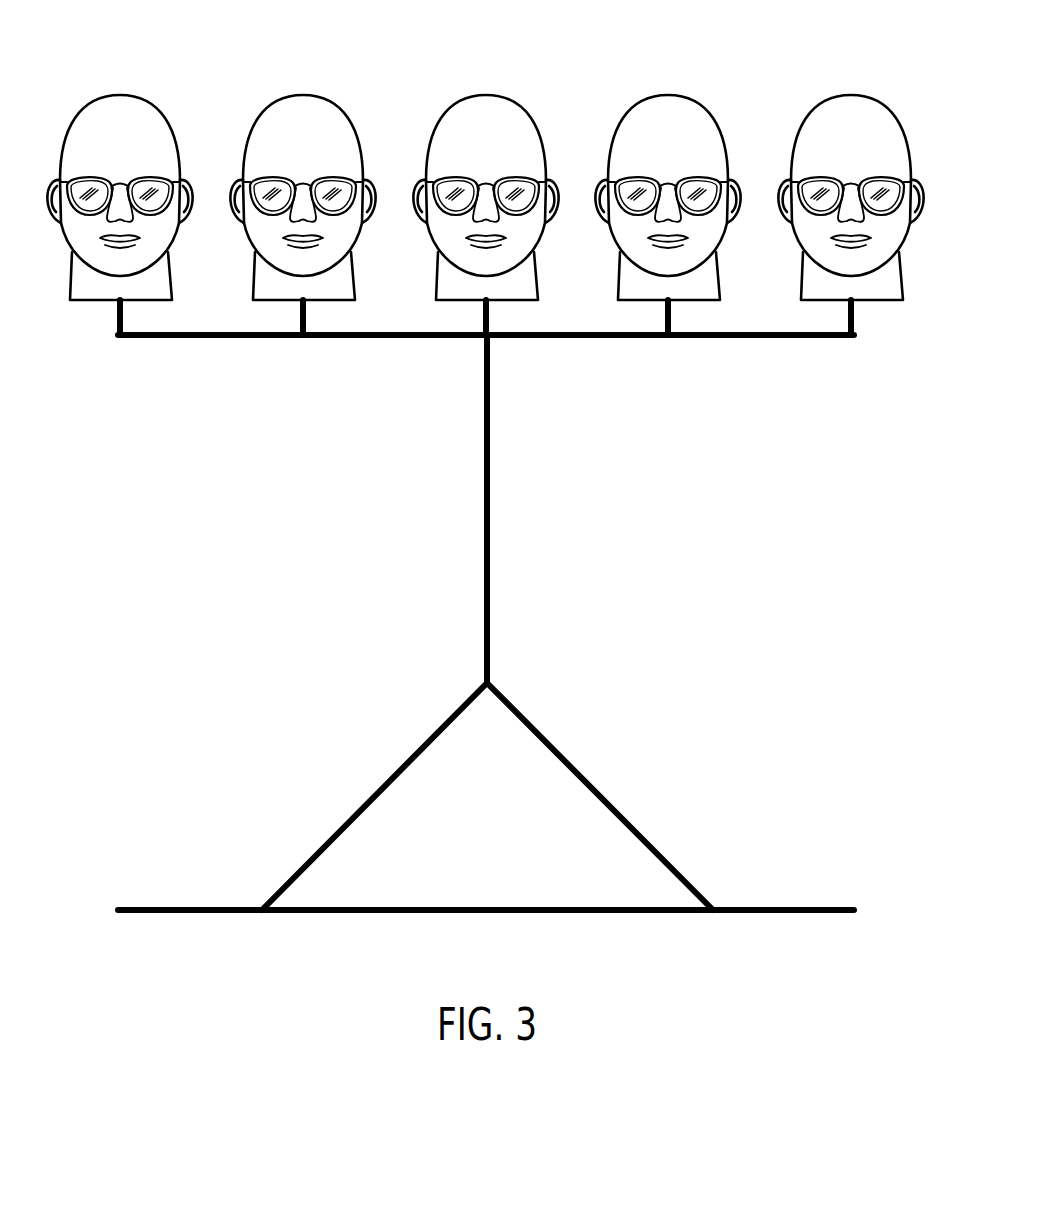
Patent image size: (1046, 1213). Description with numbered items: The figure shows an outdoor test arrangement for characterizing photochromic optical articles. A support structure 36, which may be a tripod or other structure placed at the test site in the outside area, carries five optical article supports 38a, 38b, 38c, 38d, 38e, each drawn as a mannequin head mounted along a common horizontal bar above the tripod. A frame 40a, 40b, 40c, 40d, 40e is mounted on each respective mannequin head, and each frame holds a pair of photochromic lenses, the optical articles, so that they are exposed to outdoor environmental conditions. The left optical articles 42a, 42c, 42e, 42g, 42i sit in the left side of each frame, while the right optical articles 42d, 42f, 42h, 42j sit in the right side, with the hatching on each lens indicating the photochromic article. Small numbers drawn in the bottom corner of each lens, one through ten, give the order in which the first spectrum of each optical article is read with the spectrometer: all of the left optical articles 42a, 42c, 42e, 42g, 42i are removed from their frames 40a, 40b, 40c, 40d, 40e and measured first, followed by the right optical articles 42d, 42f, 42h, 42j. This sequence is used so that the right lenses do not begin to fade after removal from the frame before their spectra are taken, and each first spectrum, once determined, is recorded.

The support structure 36 is at (490, 495).
The optical article support 38a is at (174, 312).
The optical article support 38b is at (357, 312).
The optical article support 38c is at (540, 312).
The optical article support 38d is at (722, 312).
The optical article support 38e is at (905, 312).
The frame 40a is at (130, 153).
The frame 40b is at (313, 153).
The frame 40c is at (496, 153).
The frame 40d is at (678, 153).
The frame 40e is at (861, 153).
The optical article 42a is at (117, 130).
The optical article 42c is at (255, 130).
The optical article 42d is at (344, 130).
The optical article 42e is at (438, 130).
The optical article 42f is at (527, 130).
The optical article 42g is at (620, 130).
The optical article 42h is at (709, 130).
The optical article 42i is at (803, 130).
The optical article 42j is at (892, 130).